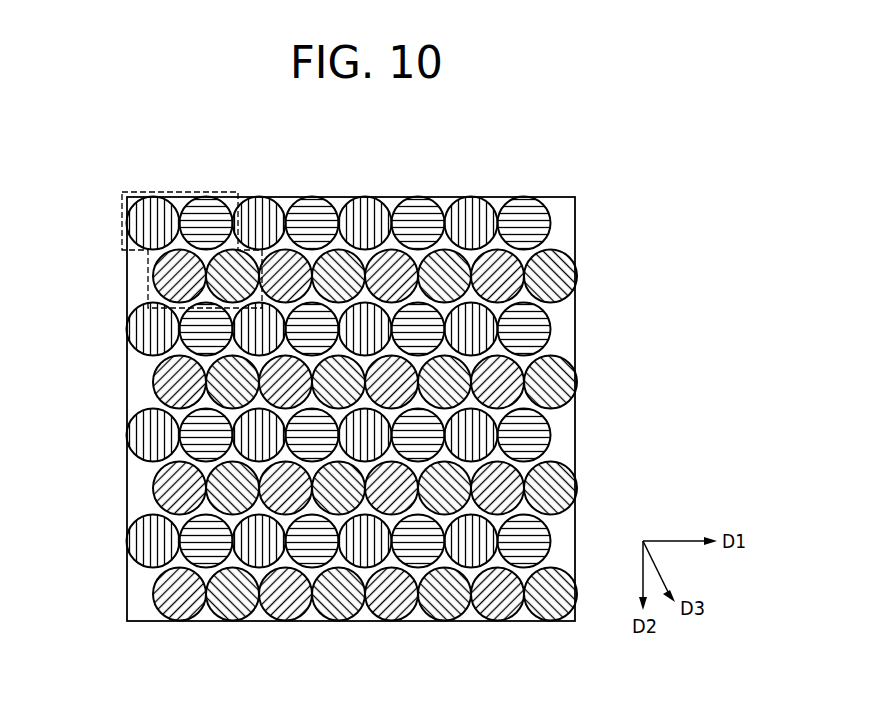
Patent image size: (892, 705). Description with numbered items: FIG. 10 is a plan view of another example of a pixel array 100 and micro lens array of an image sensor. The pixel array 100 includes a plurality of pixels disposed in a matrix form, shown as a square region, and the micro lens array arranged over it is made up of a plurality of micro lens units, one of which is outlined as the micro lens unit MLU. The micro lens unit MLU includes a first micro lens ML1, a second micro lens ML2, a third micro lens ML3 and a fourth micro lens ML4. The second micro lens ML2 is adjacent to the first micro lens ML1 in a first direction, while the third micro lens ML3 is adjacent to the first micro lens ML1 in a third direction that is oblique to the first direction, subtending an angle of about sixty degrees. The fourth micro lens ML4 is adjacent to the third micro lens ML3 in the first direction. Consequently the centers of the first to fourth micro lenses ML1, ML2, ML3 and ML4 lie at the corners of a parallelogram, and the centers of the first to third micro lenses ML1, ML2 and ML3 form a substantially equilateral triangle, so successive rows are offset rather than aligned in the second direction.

The pixel array 100 is at (572, 232).
The first micro lens ML1 is at (153, 207).
The second micro lens ML2 is at (203, 207).
The third micro lens ML3 is at (170, 260).
The fourth micro lens ML4 is at (208, 275).
The micro lens unit MLU is at (120, 203).